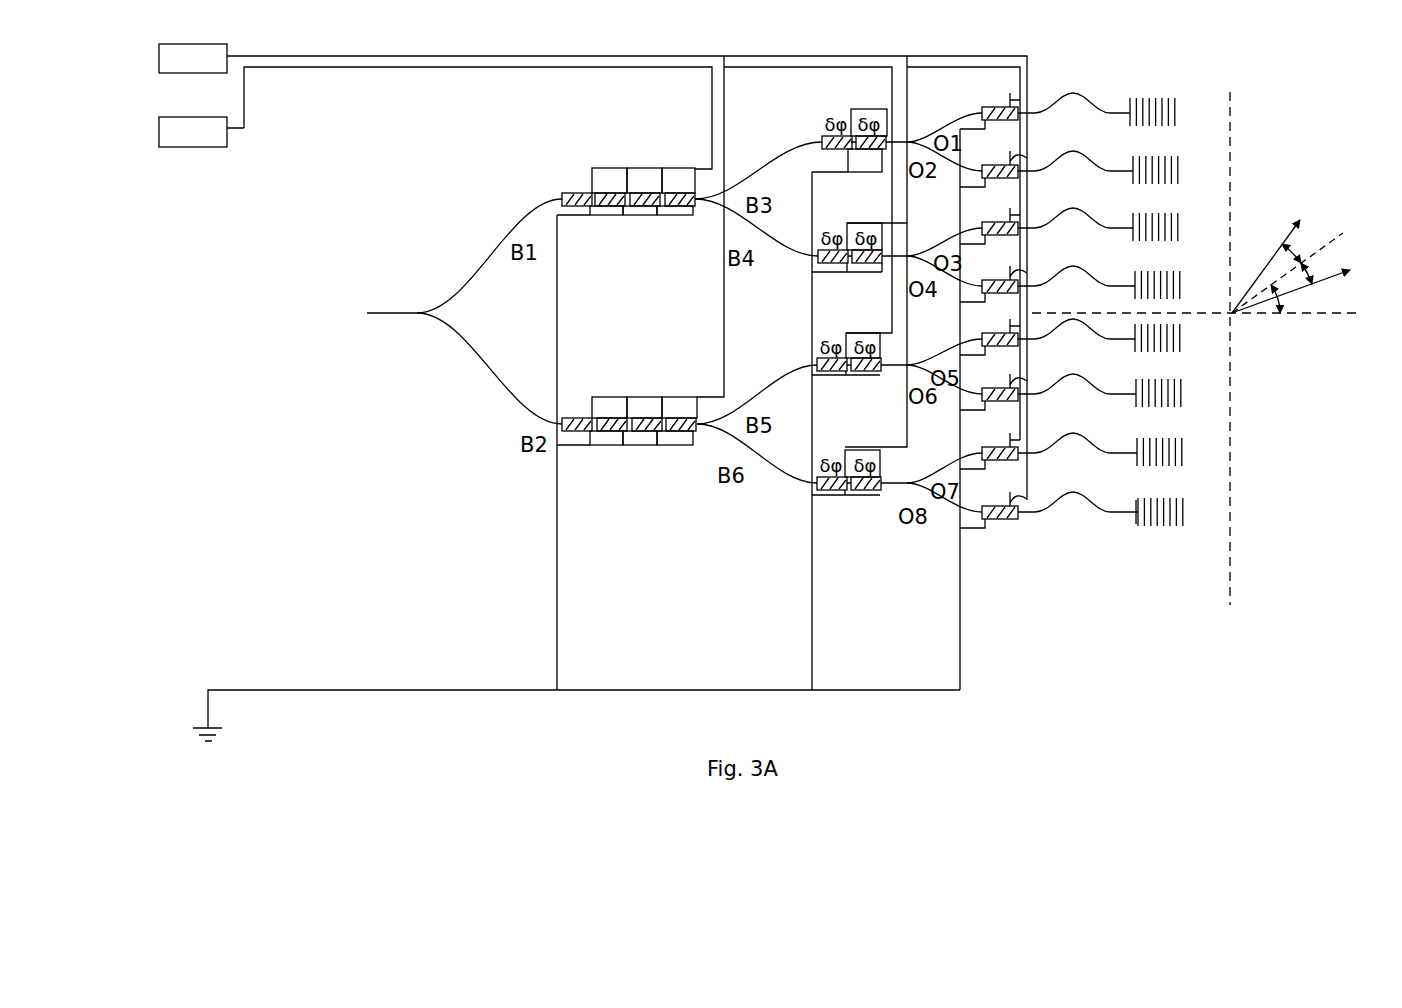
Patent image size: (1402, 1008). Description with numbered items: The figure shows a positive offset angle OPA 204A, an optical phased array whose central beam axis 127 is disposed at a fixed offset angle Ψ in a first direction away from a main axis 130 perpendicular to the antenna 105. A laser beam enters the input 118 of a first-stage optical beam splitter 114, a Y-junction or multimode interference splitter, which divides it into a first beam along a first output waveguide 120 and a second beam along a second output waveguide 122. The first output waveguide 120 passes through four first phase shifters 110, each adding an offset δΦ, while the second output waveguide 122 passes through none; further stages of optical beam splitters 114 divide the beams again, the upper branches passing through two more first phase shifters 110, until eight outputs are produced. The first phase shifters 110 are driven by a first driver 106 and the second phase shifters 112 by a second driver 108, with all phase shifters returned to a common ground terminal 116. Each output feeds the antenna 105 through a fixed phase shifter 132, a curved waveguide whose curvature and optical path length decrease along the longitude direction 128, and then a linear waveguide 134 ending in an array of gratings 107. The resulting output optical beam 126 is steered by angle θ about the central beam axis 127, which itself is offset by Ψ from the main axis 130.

The positive offset angle OPA 204A is at (127, 136).
The second driver 108 is at (175, 69).
The first driver 106 is at (175, 143).
The optical beam splitter 114 is at (461, 262).
The input 118 is at (399, 311).
The first output waveguide 120 is at (513, 224).
The second output waveguide 122 is at (488, 378).
The first phase shifter 110 is at (561, 196).
The second phase shifter 112 is at (559, 418).
The ground terminal 116 is at (576, 715).
The antenna 105 is at (1073, 574).
The array of gratings 107 is at (1155, 528).
The fixed phase shifter 132 is at (1070, 512).
The linear waveguide 134 is at (1133, 513).
The longitude direction 128 is at (1228, 598).
The output optical beam 126 is at (1284, 234).
The central beam axis 127 is at (1328, 238).
The main axis 130 is at (1292, 316).